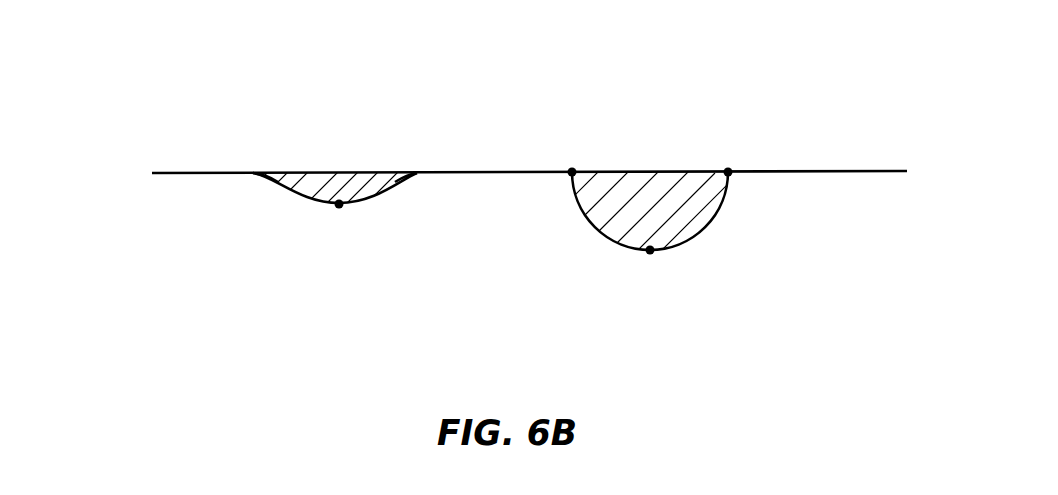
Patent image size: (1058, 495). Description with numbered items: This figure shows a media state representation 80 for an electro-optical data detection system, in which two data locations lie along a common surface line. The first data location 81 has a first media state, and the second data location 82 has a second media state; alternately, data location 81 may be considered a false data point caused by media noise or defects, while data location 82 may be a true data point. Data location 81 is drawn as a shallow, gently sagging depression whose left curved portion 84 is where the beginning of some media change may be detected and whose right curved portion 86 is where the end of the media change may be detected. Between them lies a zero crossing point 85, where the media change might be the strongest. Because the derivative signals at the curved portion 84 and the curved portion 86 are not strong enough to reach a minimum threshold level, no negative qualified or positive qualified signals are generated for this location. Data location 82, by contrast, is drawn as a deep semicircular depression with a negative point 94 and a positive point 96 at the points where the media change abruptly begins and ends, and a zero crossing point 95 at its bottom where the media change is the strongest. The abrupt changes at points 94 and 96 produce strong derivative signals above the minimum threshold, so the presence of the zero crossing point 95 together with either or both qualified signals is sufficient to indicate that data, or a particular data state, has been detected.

The media state representation 80 is at (155, 85).
The data location 81 is at (353, 138).
The data location 82 is at (652, 137).
The curved portion 84 is at (260, 155).
The zero crossing point 85 is at (339, 204).
The curved portion 86 is at (413, 158).
The negative point 94 is at (572, 172).
The zero crossing point 95 is at (650, 251).
The positive point 96 is at (728, 172).